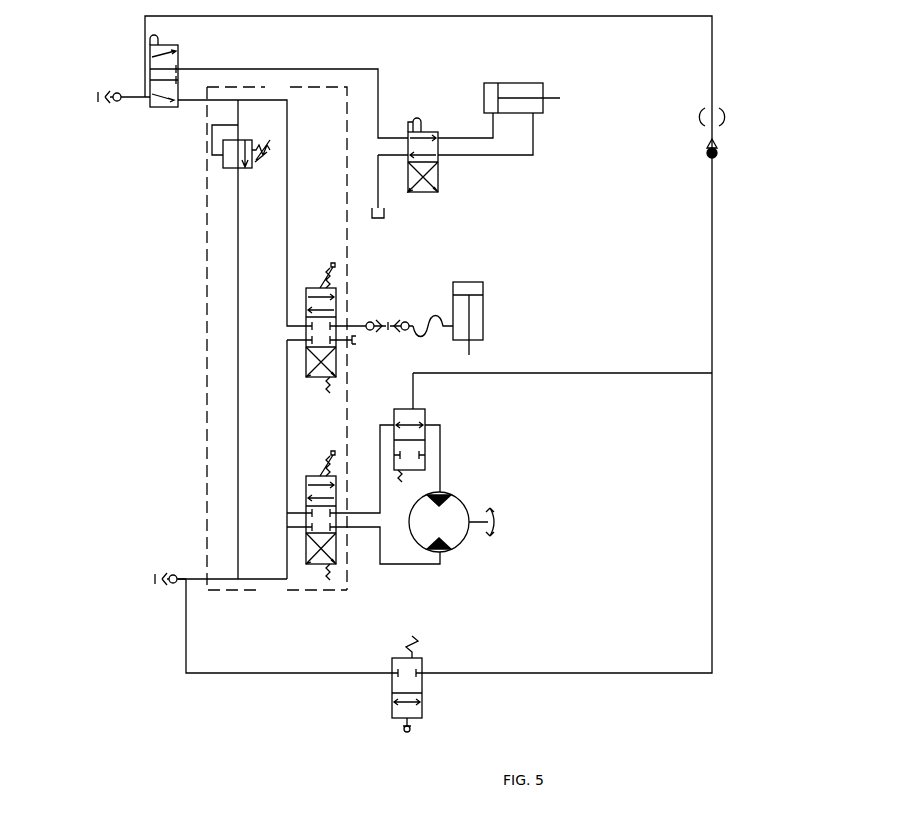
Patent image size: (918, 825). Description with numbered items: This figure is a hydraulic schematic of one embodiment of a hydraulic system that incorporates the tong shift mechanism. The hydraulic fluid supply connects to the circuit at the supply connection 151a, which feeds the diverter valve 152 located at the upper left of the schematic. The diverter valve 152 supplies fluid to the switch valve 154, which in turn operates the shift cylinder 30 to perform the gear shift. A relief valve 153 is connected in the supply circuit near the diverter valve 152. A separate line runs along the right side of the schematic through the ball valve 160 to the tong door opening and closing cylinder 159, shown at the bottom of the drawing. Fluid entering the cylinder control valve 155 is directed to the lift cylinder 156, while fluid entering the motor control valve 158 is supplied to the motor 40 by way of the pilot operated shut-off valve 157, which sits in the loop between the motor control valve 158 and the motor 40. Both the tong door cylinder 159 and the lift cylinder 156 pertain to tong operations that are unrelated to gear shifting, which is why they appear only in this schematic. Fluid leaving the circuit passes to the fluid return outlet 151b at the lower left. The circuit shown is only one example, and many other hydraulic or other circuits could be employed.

The shift cylinder 30 is at (545, 83).
The motor 40 is at (468, 497).
The hydraulic fluid supply connection 151a is at (101, 92).
The fluid return outlet 151b is at (161, 575).
The diverter valve 152 is at (178, 45).
The relief valve 153 is at (247, 138).
The switch valve 154 is at (423, 132).
The cylinder control valve 155 is at (310, 287).
The lift cylinder 156 is at (485, 310).
The pilot operated shut-off valve 157 is at (427, 408).
The motor control valve 158 is at (310, 475).
The tong door opening and closing cylinder 159 is at (422, 688).
The ball valve 160 is at (718, 152).